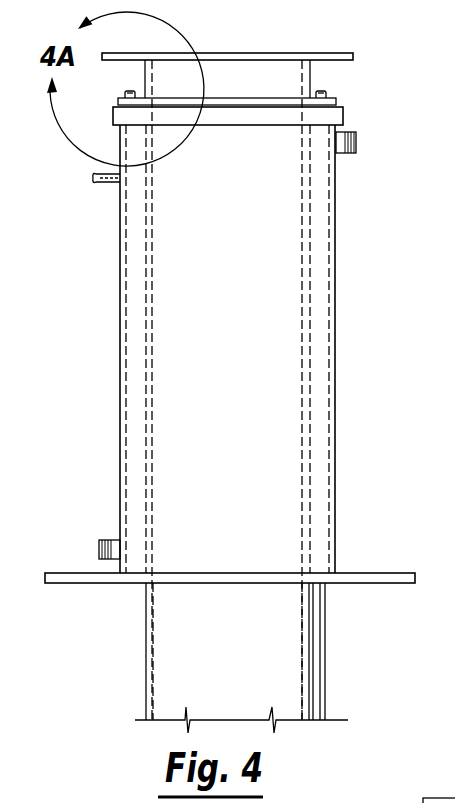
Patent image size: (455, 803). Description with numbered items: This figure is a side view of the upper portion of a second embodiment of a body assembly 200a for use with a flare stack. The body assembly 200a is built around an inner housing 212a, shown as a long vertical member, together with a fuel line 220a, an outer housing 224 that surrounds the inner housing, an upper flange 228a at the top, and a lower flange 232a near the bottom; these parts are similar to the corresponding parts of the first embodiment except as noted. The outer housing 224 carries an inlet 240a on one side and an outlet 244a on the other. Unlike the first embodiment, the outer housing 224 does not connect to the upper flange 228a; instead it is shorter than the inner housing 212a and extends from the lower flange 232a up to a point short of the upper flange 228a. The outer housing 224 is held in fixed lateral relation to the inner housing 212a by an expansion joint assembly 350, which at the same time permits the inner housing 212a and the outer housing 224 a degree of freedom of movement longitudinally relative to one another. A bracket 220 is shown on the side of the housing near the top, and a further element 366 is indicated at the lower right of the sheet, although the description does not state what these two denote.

The body assembly 200a is at (118, 392).
The outer housing 224 is at (335, 345).
The upper flange 228a is at (335, 53).
The outlet 244a is at (345, 131).
The support bracket 220 is at (108, 183).
The inlet 240a is at (110, 539).
The lower flange 232a is at (375, 573).
The inner housing 212a is at (146, 653).
The fuel line 220a is at (325, 648).
The expansion joint assembly 350 is at (447, 719).
The base 366 is at (454, 797).